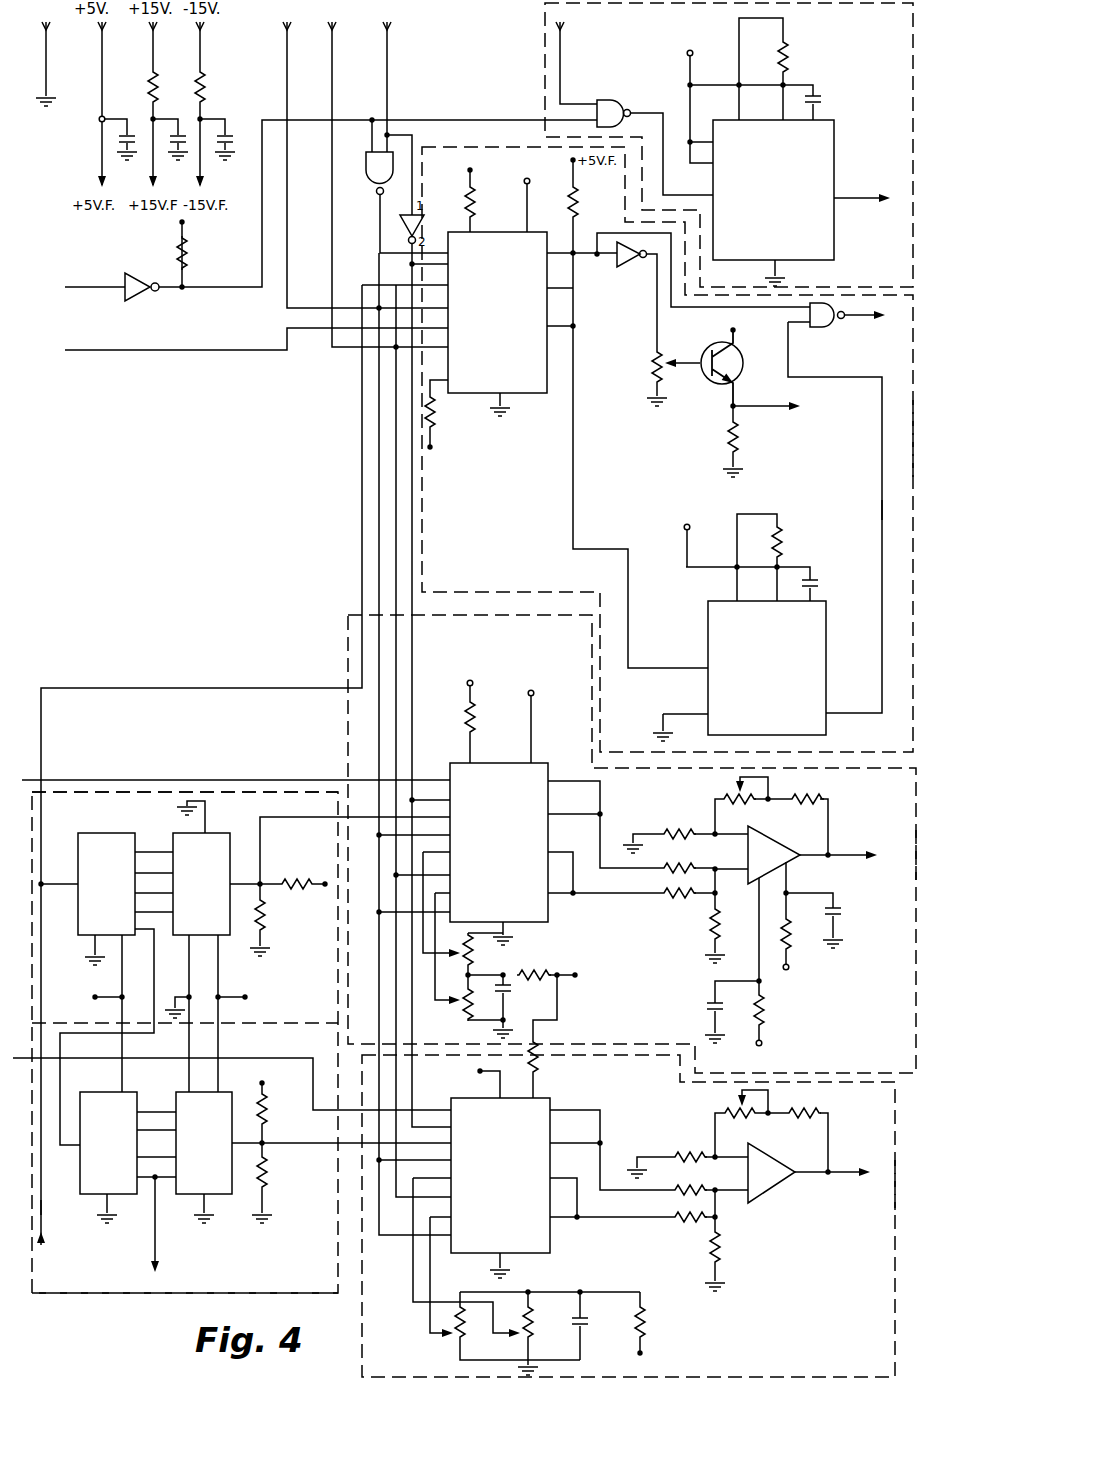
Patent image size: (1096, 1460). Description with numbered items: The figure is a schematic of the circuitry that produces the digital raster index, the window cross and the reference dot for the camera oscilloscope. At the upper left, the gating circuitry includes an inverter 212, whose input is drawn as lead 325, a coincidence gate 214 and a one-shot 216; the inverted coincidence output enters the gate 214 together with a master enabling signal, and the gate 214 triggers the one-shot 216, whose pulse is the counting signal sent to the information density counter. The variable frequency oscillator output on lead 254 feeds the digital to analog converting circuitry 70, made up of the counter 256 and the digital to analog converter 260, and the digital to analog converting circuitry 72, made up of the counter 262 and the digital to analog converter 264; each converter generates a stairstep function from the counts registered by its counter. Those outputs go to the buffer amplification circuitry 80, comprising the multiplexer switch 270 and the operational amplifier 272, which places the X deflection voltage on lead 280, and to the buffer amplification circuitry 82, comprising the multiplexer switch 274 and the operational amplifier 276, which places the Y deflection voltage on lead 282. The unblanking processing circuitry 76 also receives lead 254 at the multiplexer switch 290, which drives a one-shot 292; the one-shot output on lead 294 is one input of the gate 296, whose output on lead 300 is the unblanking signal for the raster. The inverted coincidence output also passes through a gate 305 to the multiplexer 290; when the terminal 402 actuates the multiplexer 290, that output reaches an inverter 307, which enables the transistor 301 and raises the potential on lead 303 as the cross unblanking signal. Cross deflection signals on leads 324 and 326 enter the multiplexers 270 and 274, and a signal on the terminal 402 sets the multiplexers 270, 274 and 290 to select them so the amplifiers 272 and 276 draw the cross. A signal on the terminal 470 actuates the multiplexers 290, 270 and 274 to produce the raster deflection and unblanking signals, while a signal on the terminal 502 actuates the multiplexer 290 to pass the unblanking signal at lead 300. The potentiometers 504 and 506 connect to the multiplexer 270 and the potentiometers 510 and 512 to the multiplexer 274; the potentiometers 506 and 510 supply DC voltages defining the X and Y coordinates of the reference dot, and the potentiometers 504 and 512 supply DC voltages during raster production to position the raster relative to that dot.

The digital to analog converting circuitry 70 is at (92, 792).
The digital to analog converting circuitry 72 is at (105, 1295).
The unblanking processing circuitry 76 is at (912, 482).
The buffer amplification circuitry 80 is at (915, 864).
The buffer amplification circuitry 82 is at (896, 1192).
The inverter 212 is at (130, 280).
The gate 214 is at (608, 100).
The one-shot 216 is at (836, 162).
The lead 254 is at (45, 1207).
The counter 256 is at (96, 833).
The digital to analog converter 260 is at (232, 842).
The counter 262 is at (82, 1162).
The digital to analog converter 264 is at (234, 1098).
The multiplexer switch 270 is at (504, 763).
The operational amplifier 272 is at (772, 836).
The multiplexer switch 274 is at (550, 1233).
The operational amplifier 276 is at (772, 1198).
The lead 280 is at (838, 852).
The lead 282 is at (835, 1170).
The multiplexer switch 290 is at (538, 396).
The one-shot 292 is at (826, 620).
The lead 294 is at (882, 512).
The gate 296 is at (826, 330).
The lead 300 is at (855, 320).
The transistor 301 is at (712, 382).
The lead 303 is at (745, 406).
The gate 305 is at (366, 184).
The inverter 307 is at (630, 268).
The lead 324 is at (22, 778).
The input line 325 is at (78, 287).
The lead 326 is at (27, 1060).
The terminal 402 is at (411, 118).
The terminal 470 is at (365, 166).
The terminal 502 is at (388, 186).
The potentiometer 504 is at (472, 956).
The potentiometer 506 is at (460, 1010).
The potentiometer 510 is at (530, 1330).
The potentiometer 512 is at (450, 1338).